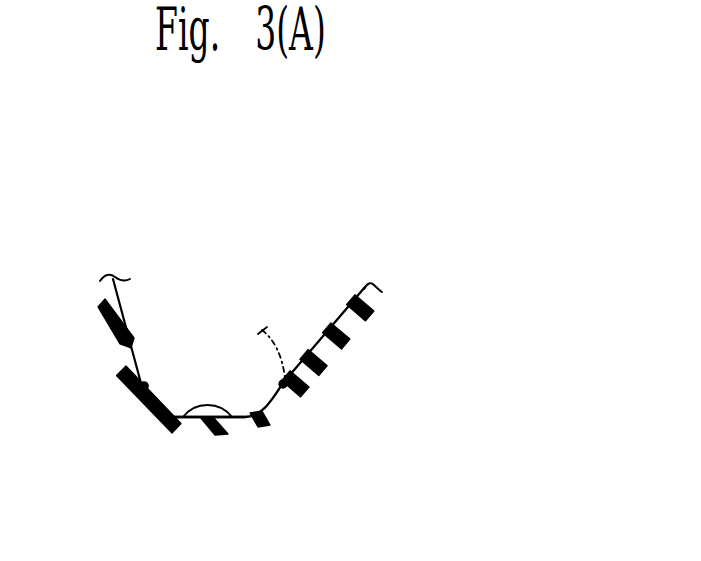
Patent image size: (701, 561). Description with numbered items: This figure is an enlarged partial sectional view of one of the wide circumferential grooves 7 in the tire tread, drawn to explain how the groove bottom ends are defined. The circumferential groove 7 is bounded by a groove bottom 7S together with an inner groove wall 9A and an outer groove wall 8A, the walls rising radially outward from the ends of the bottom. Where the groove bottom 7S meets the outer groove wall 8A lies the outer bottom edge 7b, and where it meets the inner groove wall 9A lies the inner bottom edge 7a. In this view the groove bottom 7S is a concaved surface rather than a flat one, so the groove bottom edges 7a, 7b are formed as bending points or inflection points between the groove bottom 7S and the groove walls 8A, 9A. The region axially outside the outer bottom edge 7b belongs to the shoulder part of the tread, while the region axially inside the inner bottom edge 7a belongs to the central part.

The circumferential groove 7 is at (209, 325).
The inner bottom edge 7a is at (285, 387).
The outer bottom edge 7b is at (134, 391).
The groove bottom 7S is at (232, 418).
The outer groove wall 8A is at (126, 316).
The inner groove wall 9A is at (340, 309).